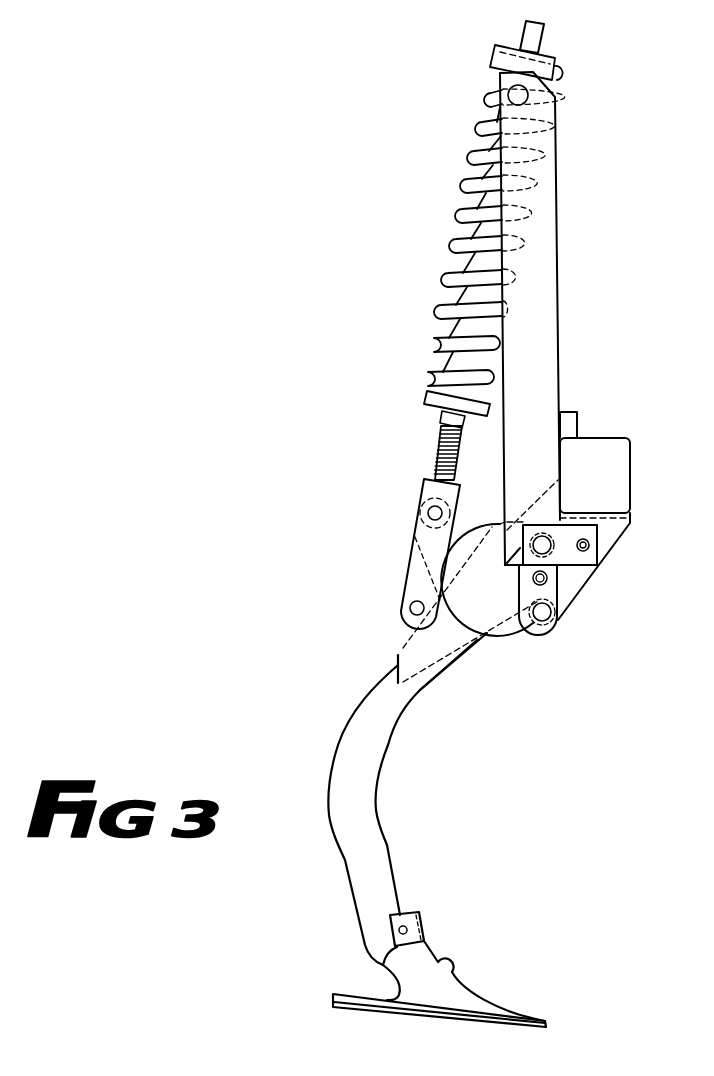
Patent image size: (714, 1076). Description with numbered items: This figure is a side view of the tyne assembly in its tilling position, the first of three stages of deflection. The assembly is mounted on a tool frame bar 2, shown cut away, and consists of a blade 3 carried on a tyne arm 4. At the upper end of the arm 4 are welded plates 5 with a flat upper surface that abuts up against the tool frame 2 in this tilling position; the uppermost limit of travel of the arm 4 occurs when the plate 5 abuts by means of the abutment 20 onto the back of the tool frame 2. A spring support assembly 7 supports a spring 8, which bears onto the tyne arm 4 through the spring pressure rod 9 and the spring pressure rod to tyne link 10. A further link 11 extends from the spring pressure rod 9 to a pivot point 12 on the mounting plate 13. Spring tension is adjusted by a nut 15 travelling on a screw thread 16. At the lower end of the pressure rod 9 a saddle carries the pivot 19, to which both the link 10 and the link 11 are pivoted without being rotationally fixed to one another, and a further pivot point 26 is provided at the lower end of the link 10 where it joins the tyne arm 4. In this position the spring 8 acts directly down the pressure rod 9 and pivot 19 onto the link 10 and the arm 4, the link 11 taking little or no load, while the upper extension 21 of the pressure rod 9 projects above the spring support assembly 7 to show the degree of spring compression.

The tool frame bar 2 is at (600, 467).
The blade 3 is at (427, 990).
The tyne arm 4 is at (358, 728).
The plates 5 is at (633, 523).
The spring support assembly 7 is at (538, 242).
The spring 8 is at (462, 282).
The spring pressure rod 9 is at (442, 452).
The spring pressure rod to tyne link 10 is at (413, 577).
The further link 11 is at (477, 610).
The pivot point 12 is at (557, 622).
The mounting plate 13 is at (570, 585).
The nut 15 is at (443, 414).
The screw thread 16 is at (447, 433).
The pivot 19 is at (430, 512).
The abutment 20 is at (500, 531).
The upper extension 21 is at (530, 42).
The further pivot point 26 is at (410, 608).